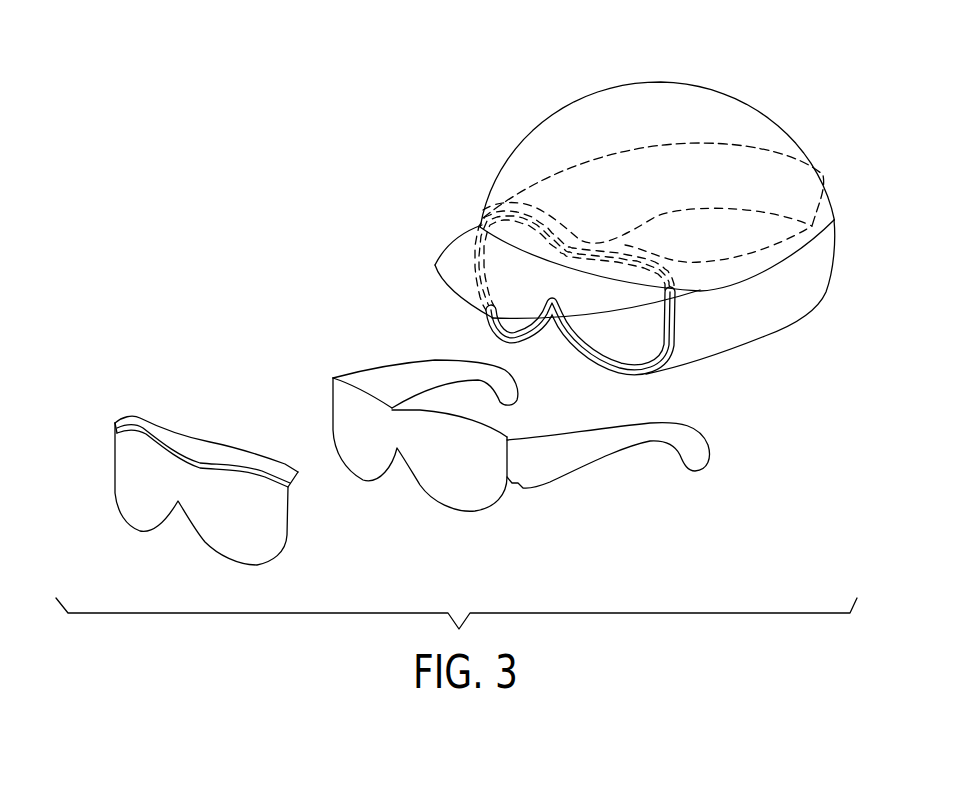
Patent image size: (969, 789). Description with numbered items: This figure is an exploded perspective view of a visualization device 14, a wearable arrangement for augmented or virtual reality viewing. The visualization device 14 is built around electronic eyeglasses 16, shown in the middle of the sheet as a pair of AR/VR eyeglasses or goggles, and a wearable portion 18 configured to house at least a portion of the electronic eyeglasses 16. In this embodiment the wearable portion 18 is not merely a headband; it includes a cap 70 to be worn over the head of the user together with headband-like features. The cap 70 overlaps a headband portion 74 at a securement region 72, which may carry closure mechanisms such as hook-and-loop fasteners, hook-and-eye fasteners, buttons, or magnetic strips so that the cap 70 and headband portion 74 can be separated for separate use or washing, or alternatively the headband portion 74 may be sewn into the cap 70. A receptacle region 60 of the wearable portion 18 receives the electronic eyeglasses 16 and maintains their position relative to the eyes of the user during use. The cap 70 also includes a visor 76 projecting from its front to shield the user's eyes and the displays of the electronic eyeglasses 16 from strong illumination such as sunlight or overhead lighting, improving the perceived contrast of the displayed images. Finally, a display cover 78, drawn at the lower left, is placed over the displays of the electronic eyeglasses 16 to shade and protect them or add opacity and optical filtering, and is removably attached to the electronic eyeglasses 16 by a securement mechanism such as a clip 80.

The visualization device 14 is at (653, 50).
The wearable portion 18 is at (750, 75).
The cap 70 is at (750, 108).
The securement region 72 is at (822, 180).
The headband portion 74 is at (832, 247).
The visor 76 is at (450, 257).
The receptacle region 60 is at (645, 350).
The electronic eyeglasses 16 is at (435, 360).
The display cover 78 is at (138, 416).
The clip 80 is at (246, 447).